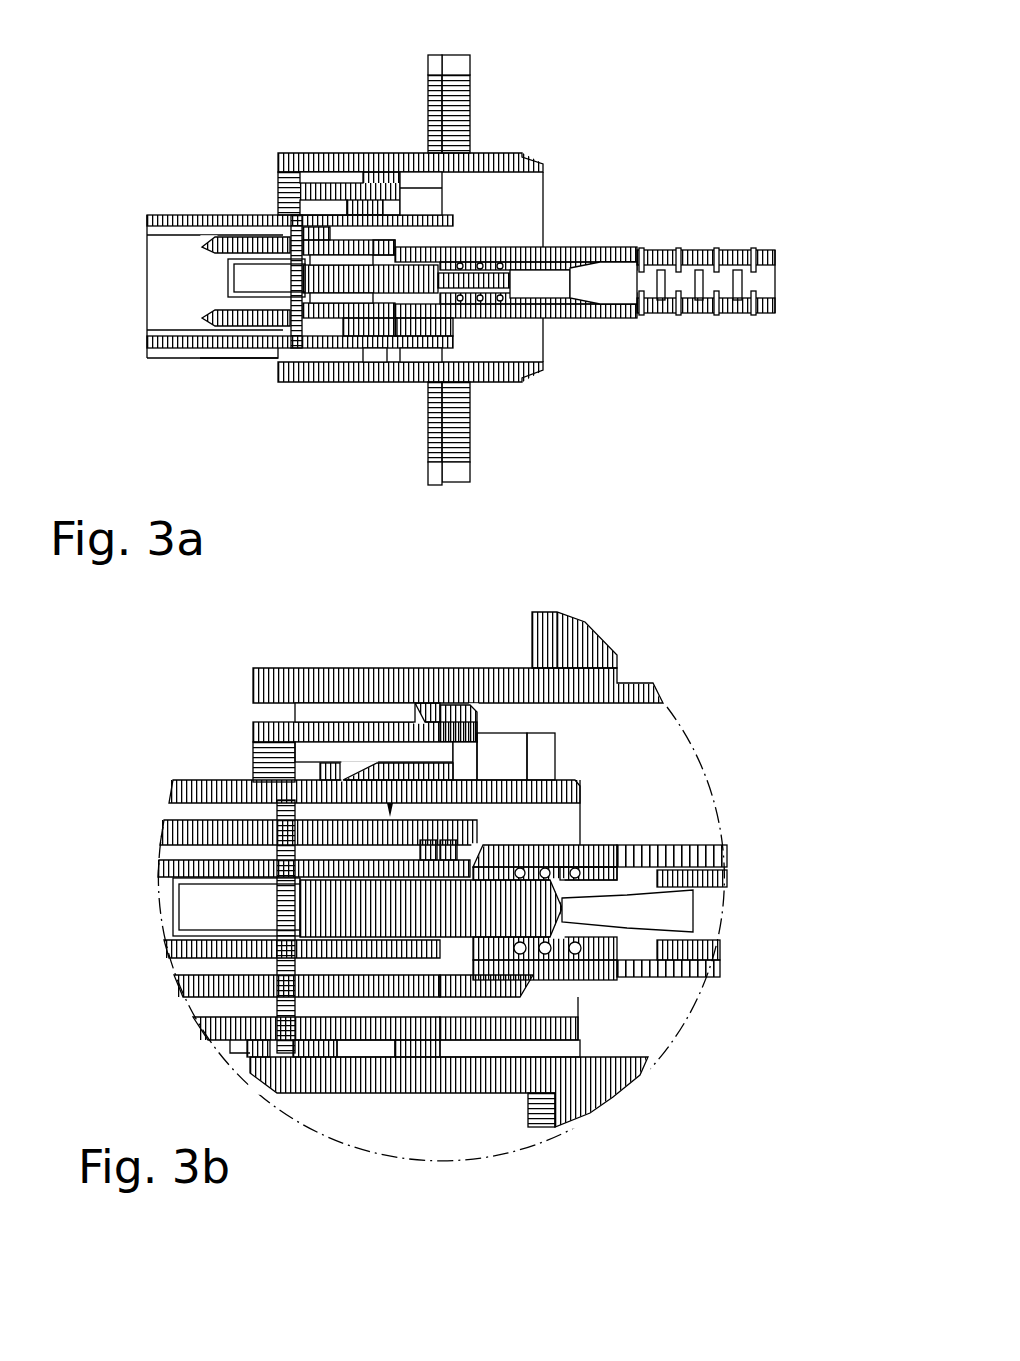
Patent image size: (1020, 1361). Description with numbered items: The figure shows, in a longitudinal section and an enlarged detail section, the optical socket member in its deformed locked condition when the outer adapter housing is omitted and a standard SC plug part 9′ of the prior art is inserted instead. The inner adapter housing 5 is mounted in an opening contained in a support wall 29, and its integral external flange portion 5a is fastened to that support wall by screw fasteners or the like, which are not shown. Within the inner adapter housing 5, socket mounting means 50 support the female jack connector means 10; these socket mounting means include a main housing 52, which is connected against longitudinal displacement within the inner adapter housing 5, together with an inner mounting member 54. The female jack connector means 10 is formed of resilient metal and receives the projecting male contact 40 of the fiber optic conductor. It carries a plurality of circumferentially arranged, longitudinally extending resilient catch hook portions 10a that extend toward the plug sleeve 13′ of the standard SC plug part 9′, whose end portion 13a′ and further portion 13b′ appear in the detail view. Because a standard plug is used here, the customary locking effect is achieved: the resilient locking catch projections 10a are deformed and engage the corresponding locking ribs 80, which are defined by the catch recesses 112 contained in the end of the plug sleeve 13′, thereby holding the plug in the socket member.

In FIG. 3A, the inner adapter housing 5 is at (431, 225).
In FIG. 3B, the inner adapter housing 5 is at (432, 668).
In FIG. 3A, the external flange portion 5a is at (470, 93).
In FIG. 3B, the external flange portion 5a is at (573, 650).
In FIG. 3A, the standard SC plug part 9′ is at (605, 252).
In FIG. 3B, the standard SC plug part 9′ is at (612, 838).
In FIG. 3A, the female jack connector means 10 is at (330, 337).
In FIG. 3B, the female jack connector means 10 is at (392, 812).
In FIG. 3A, the resilient catch hook portions 10a is at (383, 322).
In FIG. 3B, the resilient catch hook portions 10a is at (443, 853).
In FIG. 3B, the plug sleeve 13′ is at (570, 843).
In FIG. 3B, the end portion of plug sleeve 13a′ is at (265, 767).
In FIG. 3B, the portion of plug sleeve 13b′ is at (727, 855).
In FIG. 3A, the support wall 29 is at (423, 105).
In FIG. 3B, the support wall 29 is at (527, 1125).
In FIG. 3A, the male contact 40 is at (262, 245).
In FIG. 3B, the male contact 40 is at (213, 860).
In FIG. 3A, the socket mounting means 50 is at (240, 365).
In FIG. 3B, the socket mounting means 50 is at (205, 1051).
In FIG. 3A, the main housing 52 is at (332, 367).
In FIG. 3B, the main housing 52 is at (363, 1067).
In FIG. 3A, the inner mounting member 54 is at (452, 350).
In FIG. 3B, the inner mounting member 54 is at (580, 1027).
In FIG. 3A, the locking ribs 80 is at (278, 200).
In FIG. 3B, the locking ribs 80 is at (432, 850).
In FIG. 3A, the catch recesses 112 is at (385, 238).
In FIG. 3B, the catch recesses 112 is at (462, 858).